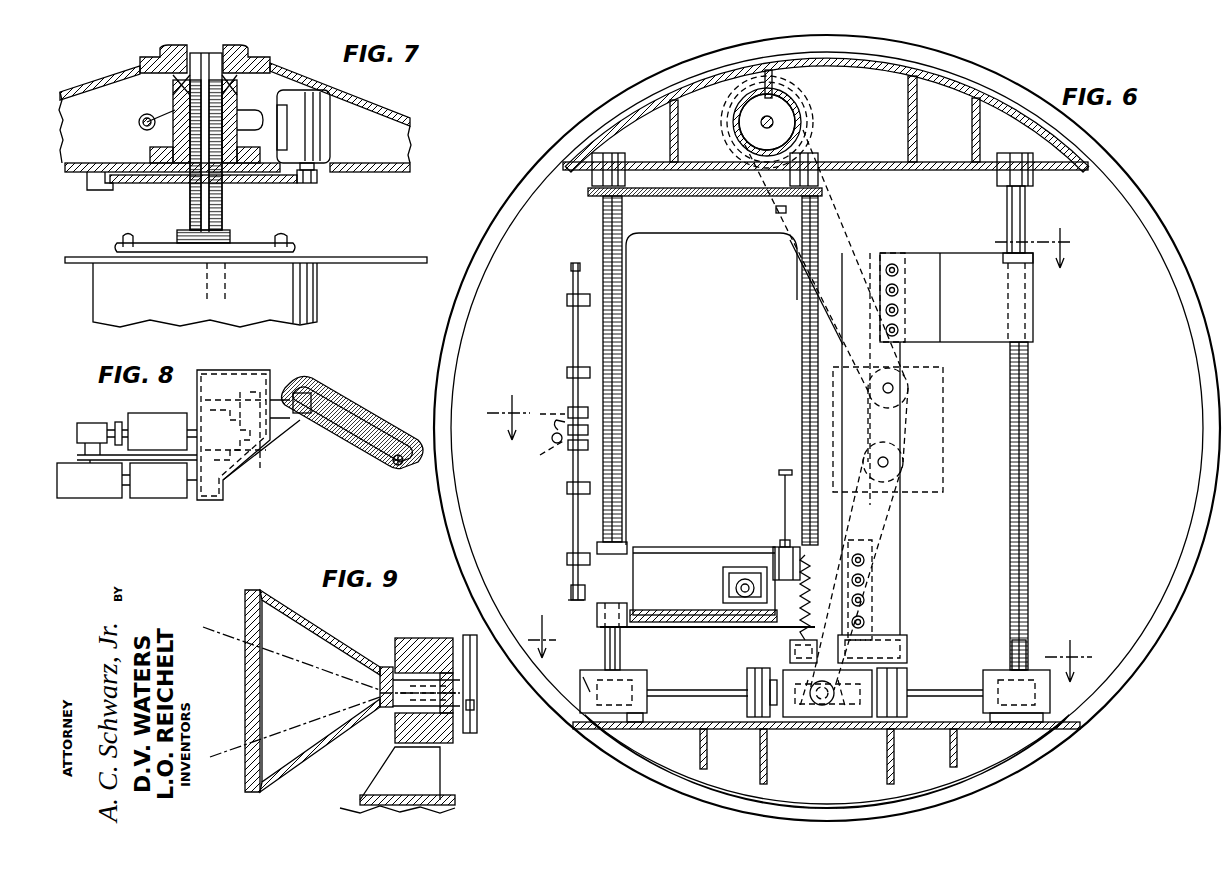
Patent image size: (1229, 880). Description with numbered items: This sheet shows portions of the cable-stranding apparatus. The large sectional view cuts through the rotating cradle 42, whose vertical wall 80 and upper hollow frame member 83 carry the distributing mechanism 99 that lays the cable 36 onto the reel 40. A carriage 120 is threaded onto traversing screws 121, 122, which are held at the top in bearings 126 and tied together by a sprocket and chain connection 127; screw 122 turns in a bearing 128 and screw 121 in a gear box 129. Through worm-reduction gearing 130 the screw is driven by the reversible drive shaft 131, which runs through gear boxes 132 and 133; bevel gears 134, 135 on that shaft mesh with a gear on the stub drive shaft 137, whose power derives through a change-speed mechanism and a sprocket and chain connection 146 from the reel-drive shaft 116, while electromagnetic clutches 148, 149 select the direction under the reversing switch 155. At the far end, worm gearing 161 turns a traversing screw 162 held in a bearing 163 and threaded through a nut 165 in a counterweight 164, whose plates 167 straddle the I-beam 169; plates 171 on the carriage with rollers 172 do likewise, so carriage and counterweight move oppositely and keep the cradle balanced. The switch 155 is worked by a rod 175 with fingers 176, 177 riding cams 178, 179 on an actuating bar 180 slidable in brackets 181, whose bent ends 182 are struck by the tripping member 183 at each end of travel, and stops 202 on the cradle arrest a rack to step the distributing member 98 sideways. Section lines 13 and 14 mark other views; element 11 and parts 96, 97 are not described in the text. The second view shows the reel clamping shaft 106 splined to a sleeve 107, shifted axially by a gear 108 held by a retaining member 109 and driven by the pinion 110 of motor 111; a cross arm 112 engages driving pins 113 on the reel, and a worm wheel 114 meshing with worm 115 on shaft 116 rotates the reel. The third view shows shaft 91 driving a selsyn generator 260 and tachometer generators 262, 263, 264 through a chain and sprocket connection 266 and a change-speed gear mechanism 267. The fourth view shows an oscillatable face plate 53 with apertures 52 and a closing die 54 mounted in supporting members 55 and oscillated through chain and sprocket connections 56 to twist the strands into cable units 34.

In FIG. 6, the pulley 11 is at (775, 120).
In FIG. 6, the section line 13 is at (787, 328).
In FIG. 6, the section line 14 is at (810, 647).
In FIG. 9, the cable units 34 is at (478, 700).
In FIG. 6, the cable 36 is at (730, 596).
In FIG. 7, the reel 40 is at (320, 300).
In FIG. 6, the cradle 42 is at (600, 98).
In FIG. 7, the cradle 42 is at (410, 111).
In FIG. 9, the apertures 52 is at (260, 660).
In FIG. 9, the oscillatable face plates 53 is at (265, 645).
In FIG. 9, the closing dies 54 is at (380, 690).
In FIG. 9, the supporting members 55 is at (450, 758).
In FIG. 9, the chain and sprocket connections 56 is at (478, 730).
In FIG. 6, the vertical wall of the cradle 80 is at (560, 188).
In FIG. 6, the upper hollow horizontal frame member 83 is at (1080, 172).
In FIG. 7, the upper hollow horizontal frame member 83 is at (380, 172).
In FIG. 8, the shaft 91 is at (390, 466).
In FIG. 6, the bearing bracket 96 is at (724, 580).
In FIG. 6, the plate 97 is at (650, 246).
In FIG. 6, the distributing member 98 is at (760, 548).
In FIG. 6, the distributing mechanism 99 is at (766, 522).
In FIG. 7, the reel centering and clamping shaft 106 is at (190, 212).
In FIG. 7, the sleeve 107 is at (165, 140).
In FIG. 7, the gear 108 is at (140, 185).
In FIG. 7, the retaining member 109 is at (98, 188).
In FIG. 7, the driving pinion 110 is at (318, 178).
In FIG. 7, the motor 111 is at (332, 130).
In FIG. 7, the cross arm 112 is at (240, 243).
In FIG. 7, the driving pins 113 is at (120, 235).
In FIG. 7, the worm wheel 114 is at (248, 112).
In FIG. 7, the worm 115 is at (139, 122).
In FIG. 7, the horizontal shaft 116 is at (147, 115).
In FIG. 6, the carriage 120 is at (664, 548).
In FIG. 6, the traversing screw 121 is at (620, 372).
In FIG. 6, the traversing screw 122 is at (802, 352).
In FIG. 6, the bearings 126 is at (643, 150).
In FIG. 6, the sprocket and chain connection 127 is at (700, 195).
In FIG. 6, the bearing 128 is at (740, 636).
In FIG. 6, the gear box 129 is at (630, 670).
In FIG. 6, the worm-reduction gearing 130 is at (585, 672).
In FIG. 6, the reversible drive shaft 131 is at (696, 680).
In FIG. 6, the gear box 132 is at (818, 718).
In FIG. 6, the gear box 133 is at (984, 704).
In FIG. 6, the bevel gear 134 is at (812, 705).
In FIG. 6, the bevel gear 135 is at (845, 706).
In FIG. 6, the stub drive shaft 137 is at (872, 649).
In FIG. 6, the sprocket and chain connection 146 is at (812, 312).
In FIG. 6, the electromagnetic clutch 148 is at (748, 684).
In FIG. 6, the electromagnetic clutch 149 is at (895, 670).
In FIG. 6, the reversing switch 155 is at (545, 452).
In FIG. 6, the worm gearing 161 is at (1010, 660).
In FIG. 6, the traversing screw 162 is at (1030, 452).
In FIG. 6, the bearing 163 is at (1000, 178).
In FIG. 6, the counterweight 164 is at (1034, 326).
In FIG. 6, the nut 165 is at (1035, 262).
In FIG. 6, the plates 167 is at (920, 262).
In FIG. 6, the I-beam 169 is at (888, 590).
In FIG. 6, the plates 171 is at (860, 530).
In FIG. 6, the rollers 172 is at (888, 258).
In FIG. 6, the rod 175 is at (556, 428).
In FIG. 6, the finger 176 is at (568, 428).
In FIG. 6, the finger 177 is at (556, 445).
In FIG. 6, the cam 178 is at (570, 410).
In FIG. 6, the cam 179 is at (568, 448).
In FIG. 6, the actuating bar 180 is at (572, 318).
In FIG. 6, the brackets 181 is at (568, 370).
In FIG. 6, the laterally bent ends 182 is at (572, 266).
In FIG. 6, the tripping member 183 is at (571, 590).
In FIG. 6, the stops 202 is at (778, 220).
In FIG. 8, the selsyn generator 260 is at (92, 428).
In FIG. 8, the tachometer generator 262 is at (147, 420).
In FIG. 8, the tachometer generator 263 is at (145, 497).
In FIG. 8, the tachometer generator 264 is at (73, 497).
In FIG. 8, the chain and sprocket connection 266 is at (358, 418).
In FIG. 8, the change-speed gear mechanism 267 is at (222, 400).